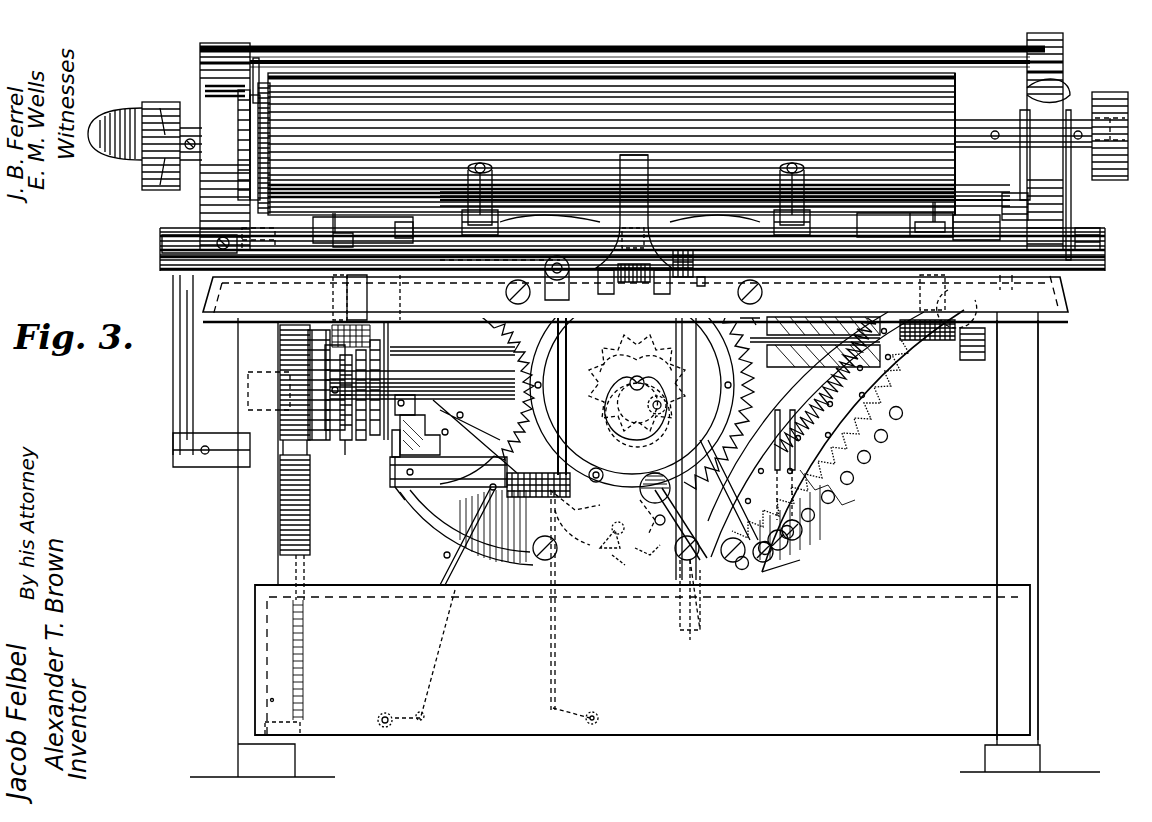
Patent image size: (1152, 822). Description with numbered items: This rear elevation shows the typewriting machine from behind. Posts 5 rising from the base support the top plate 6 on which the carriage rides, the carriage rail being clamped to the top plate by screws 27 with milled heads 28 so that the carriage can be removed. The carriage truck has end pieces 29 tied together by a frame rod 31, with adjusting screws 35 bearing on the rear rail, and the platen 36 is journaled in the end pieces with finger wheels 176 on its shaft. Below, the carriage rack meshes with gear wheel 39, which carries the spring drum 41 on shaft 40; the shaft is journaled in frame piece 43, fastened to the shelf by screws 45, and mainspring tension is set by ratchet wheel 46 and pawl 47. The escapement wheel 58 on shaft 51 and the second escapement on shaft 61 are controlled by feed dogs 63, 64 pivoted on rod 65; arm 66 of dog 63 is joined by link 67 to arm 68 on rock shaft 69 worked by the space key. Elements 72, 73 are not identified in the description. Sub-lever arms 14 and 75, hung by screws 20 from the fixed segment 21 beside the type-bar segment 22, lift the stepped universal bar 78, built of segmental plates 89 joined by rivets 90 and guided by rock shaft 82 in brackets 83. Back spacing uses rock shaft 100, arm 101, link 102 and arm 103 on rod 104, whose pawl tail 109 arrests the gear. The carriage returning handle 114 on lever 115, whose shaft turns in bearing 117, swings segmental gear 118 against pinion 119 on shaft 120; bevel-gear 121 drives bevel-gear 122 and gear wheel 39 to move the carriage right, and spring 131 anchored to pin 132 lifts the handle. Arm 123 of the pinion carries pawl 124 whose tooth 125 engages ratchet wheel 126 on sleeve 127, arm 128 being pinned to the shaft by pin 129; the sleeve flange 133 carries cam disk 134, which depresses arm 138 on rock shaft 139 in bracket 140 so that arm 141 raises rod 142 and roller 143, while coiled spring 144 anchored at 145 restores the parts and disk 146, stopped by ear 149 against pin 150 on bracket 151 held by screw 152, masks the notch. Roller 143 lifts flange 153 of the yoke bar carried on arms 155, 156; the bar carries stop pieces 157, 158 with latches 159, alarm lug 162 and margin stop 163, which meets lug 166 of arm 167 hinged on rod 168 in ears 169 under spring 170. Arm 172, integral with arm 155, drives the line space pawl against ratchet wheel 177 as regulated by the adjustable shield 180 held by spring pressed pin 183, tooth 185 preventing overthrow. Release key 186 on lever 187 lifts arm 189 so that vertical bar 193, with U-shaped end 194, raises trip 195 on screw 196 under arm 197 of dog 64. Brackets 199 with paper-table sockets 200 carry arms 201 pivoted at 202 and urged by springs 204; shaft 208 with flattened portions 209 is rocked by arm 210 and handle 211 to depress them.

The frame upright 5 is at (1033, 435).
The carriage base plate 6 is at (1015, 283).
The key levers 14 is at (785, 420).
The platen end bracket 20 is at (812, 560).
The segment arc 21 is at (925, 405).
The toothed segment 22 is at (798, 414).
The bearing block 27 is at (920, 300).
The knurled nut 28 is at (935, 340).
The platen left bracket 29 is at (205, 105).
The top carriage rail 31 is at (853, 45).
The bracket block 35 is at (218, 235).
The platen 36 is at (962, 75).
The segment gear 39 is at (754, 325).
The cam 40 is at (640, 388).
The toothed sector 41 is at (725, 360).
The lever 43 is at (715, 497).
The screw 45 is at (667, 540).
The ratchet wheel 46 is at (636, 379).
The disc 47 is at (695, 405).
The pivot pin 51 is at (652, 525).
The link 58 is at (646, 556).
The pawl 61 is at (604, 541).
The link 63 is at (620, 563).
The roller 64 is at (680, 470).
The pivot stud 65 is at (596, 468).
The arm 66 is at (575, 509).
The connecting rod 67 is at (557, 634).
The lever arm 68 is at (570, 694).
The pivot 69 is at (600, 714).
The stud 72 is at (638, 433).
The arm 73 is at (642, 517).
The stepped segment 75 is at (807, 515).
The inner arc plate 78 is at (915, 402).
The rack bar 82 is at (785, 342).
The knob 83 is at (985, 342).
The stepped stop plate 89 is at (898, 378).
The pins 90 is at (858, 400).
The pivot stud 100 is at (384, 710).
The link 101 is at (409, 706).
The lever 102 is at (460, 575).
The sector 103 is at (493, 526).
The arm 104 is at (572, 527).
The clutch sleeve 109 is at (545, 473).
The knob dome 114 is at (122, 160).
The upright post 115 is at (175, 383).
The foot bracket 117 is at (220, 468).
The gear 118 is at (318, 515).
The gear 119 is at (285, 415).
The gear wheel 120 is at (487, 392).
The shaft hub 121 is at (624, 372).
The cam plate 122 is at (650, 368).
The hub 123 is at (305, 330).
The sleeve 124 is at (318, 330).
The bearing 125 is at (322, 376).
The collar 126 is at (337, 452).
The shaft 127 is at (408, 384).
The pinion 128 is at (342, 440).
The sleeve 129 is at (325, 387).
The spring 131 is at (306, 660).
The anchor block 132 is at (276, 720).
The upper shaft 133 is at (375, 380).
The clutch disc 134 is at (375, 435).
The arm 138 is at (405, 501).
The bracket 139 is at (390, 487).
The sector arm 140 is at (468, 540).
The link 141 is at (475, 436).
The vertical bar 142 is at (572, 352).
The roller 143 is at (634, 280).
The clutch member 144 is at (361, 440).
The knurled collar 145 is at (357, 320).
The plate 146 is at (388, 330).
The bracket arm 149 is at (406, 444).
The stud 150 is at (415, 410).
The stepped bracket 151 is at (425, 428).
The rod 152 is at (417, 297).
The lower carriage rail 153 is at (842, 236).
The block 155 is at (272, 228).
The block 156 is at (1040, 203).
The bar 157 is at (425, 225).
The block 158 is at (953, 220).
The pin 159 is at (945, 215).
The slide 162 is at (366, 240).
The slide 163 is at (910, 230).
The central bracket 166 is at (633, 204).
The bracket top 167 is at (633, 185).
The stop 168 is at (712, 282).
The blocks 169 is at (660, 294).
The spring 170 is at (640, 270).
The gear 172 is at (268, 135).
The platen knob 176 is at (1108, 92).
The bar 177 is at (258, 60).
The plate 180 is at (238, 104).
The spring 183 is at (208, 86).
The plate 185 is at (260, 120).
The pin 186 is at (1135, 118).
The bar 187 is at (1071, 160).
The block 189 is at (1082, 228).
The vertical rod 193 is at (704, 350).
The knurled block 194 is at (682, 263).
The lever 195 is at (720, 510).
The lever lower end 196 is at (699, 596).
The lever arm 197 is at (705, 494).
The roller bracket 199 is at (810, 222).
The paper bail roller 200 is at (795, 165).
The bail rod 201 is at (752, 198).
The rod 202 is at (505, 252).
The spring wire 204 is at (683, 218).
The rod 208 is at (712, 185).
The bail rod 209 is at (770, 190).
The bracket part 210 is at (1020, 160).
The thumb piece 211 is at (1066, 85).